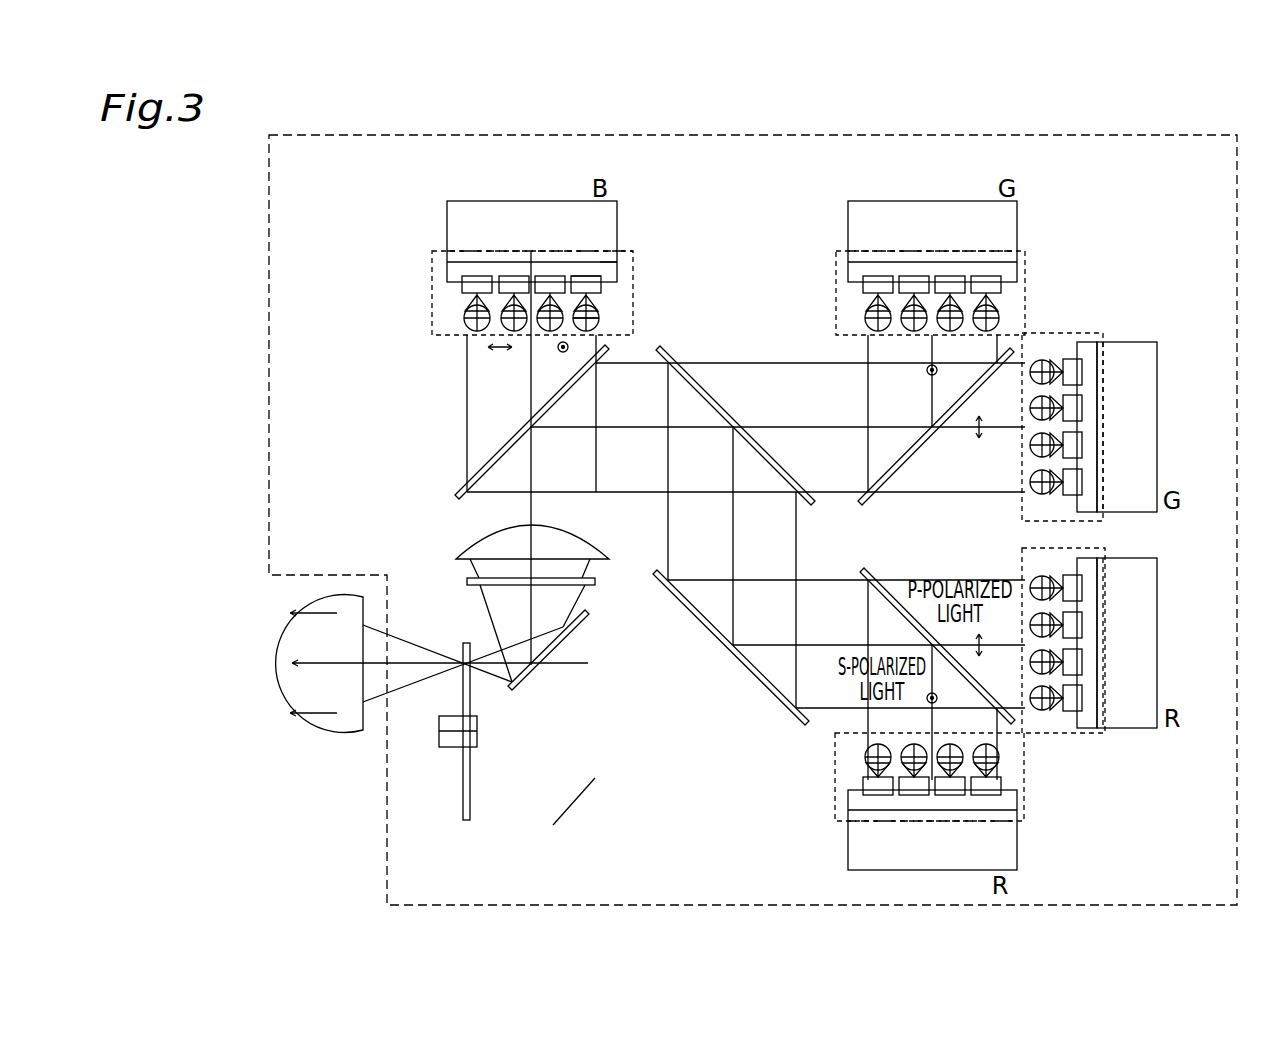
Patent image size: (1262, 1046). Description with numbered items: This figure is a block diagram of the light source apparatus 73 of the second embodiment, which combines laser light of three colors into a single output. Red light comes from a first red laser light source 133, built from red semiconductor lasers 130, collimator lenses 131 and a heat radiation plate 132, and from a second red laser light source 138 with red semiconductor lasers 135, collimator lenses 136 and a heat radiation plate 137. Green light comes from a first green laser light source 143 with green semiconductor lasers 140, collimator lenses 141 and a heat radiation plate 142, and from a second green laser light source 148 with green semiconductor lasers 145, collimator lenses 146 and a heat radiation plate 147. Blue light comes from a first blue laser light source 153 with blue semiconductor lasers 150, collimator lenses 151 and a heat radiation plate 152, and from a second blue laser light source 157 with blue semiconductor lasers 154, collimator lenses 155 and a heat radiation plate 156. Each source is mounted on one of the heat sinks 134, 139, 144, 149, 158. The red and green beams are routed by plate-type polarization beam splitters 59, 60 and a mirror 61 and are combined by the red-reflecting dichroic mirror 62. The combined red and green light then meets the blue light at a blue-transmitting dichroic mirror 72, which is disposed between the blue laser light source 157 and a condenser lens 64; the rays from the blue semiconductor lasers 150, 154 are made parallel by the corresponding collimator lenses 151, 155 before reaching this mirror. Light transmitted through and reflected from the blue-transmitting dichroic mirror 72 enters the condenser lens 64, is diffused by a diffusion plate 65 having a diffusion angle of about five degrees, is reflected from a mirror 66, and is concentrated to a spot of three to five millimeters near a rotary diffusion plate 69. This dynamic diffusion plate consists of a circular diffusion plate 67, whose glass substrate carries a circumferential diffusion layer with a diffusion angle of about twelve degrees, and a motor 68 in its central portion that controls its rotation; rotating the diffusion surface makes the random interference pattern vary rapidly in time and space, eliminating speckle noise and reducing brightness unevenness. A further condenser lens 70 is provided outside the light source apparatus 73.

The light source apparatus 73 is at (583, 134).
The heat sink 158 is at (487, 201).
The second blue laser light source 157 is at (438, 250).
The heat radiation plate 156 is at (455, 269).
The blue semiconductor lasers 154 is at (462, 290).
The collimator lenses 155 is at (465, 320).
The first blue laser light source 153 is at (627, 250).
The heat radiation plate 152 is at (608, 271).
The blue semiconductor lasers 150 is at (603, 289).
The collimator lenses 151 is at (600, 318).
The heat sink 144 is at (905, 201).
The first green laser light source 143 is at (872, 250).
The heat radiation plate 142 is at (855, 268).
The green semiconductor lasers 140 is at (863, 289).
The collimator lenses 141 is at (864, 319).
The collimator lenses 146 is at (1042, 358).
The green semiconductor lasers 145 is at (1068, 358).
The heat radiation plate 147 is at (1088, 350).
The second green laser light source 148 is at (1104, 360).
The heat sink 149 is at (1157, 375).
The collimator lenses 136 is at (1040, 712).
The red semiconductor lasers 135 is at (1070, 713).
The heat radiation plate 137 is at (1087, 718).
The second red laser light source 138 is at (1101, 690).
The heat sink 139 is at (1157, 622).
The heat sink 134 is at (1018, 855).
The first red laser light source 133 is at (873, 822).
The heat radiation plate 132 is at (852, 803).
The red semiconductor lasers 130 is at (863, 785).
The collimator lenses 131 is at (864, 757).
The blue-transmitting dichroic mirror 72 is at (458, 494).
The red-reflecting dichroic mirror 62 is at (815, 505).
The plate-type polarization beam splitter 60 is at (900, 465).
The mirror 61 is at (752, 675).
The plate-type polarization beam splitter 59 is at (867, 566).
The mirror 66 is at (522, 683).
The condenser lens 64 is at (458, 556).
The diffusion plate 65 is at (470, 581).
The condenser lens 70 is at (358, 731).
The circular diffusion plate 67 is at (472, 782).
The motor 68 is at (477, 743).
The rotary diffusion plate 69 is at (572, 806).